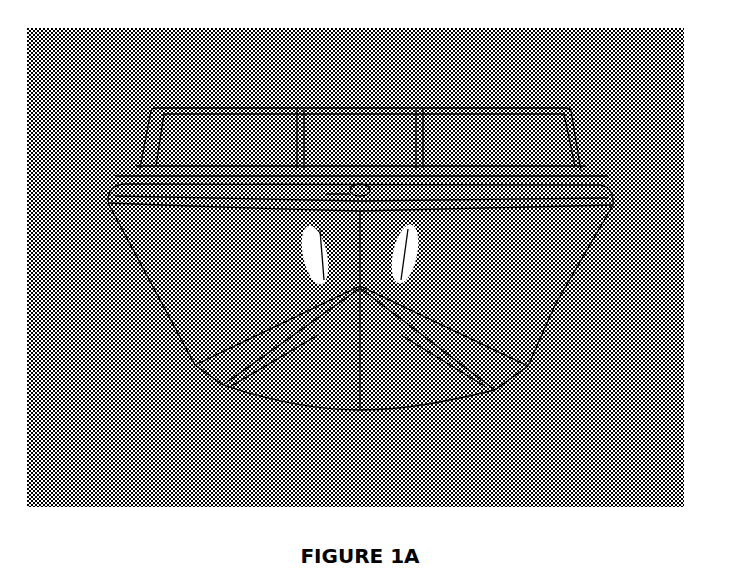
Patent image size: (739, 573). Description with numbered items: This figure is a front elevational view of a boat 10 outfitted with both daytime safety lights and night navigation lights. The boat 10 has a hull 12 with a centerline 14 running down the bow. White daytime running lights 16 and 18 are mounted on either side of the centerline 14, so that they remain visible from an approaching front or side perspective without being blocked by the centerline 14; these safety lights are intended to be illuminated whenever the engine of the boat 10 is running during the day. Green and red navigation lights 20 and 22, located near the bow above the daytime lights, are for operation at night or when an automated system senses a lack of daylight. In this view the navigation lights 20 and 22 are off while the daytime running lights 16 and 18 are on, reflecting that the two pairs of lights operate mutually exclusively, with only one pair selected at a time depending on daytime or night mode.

The boat 10 is at (617, 122).
The hull 12 is at (548, 298).
The centerline 14 is at (355, 352).
The daytime running light 16 is at (305, 247).
The daytime running light 18 is at (400, 247).
The navigation light 20 is at (330, 185).
The navigation light 22 is at (373, 185).